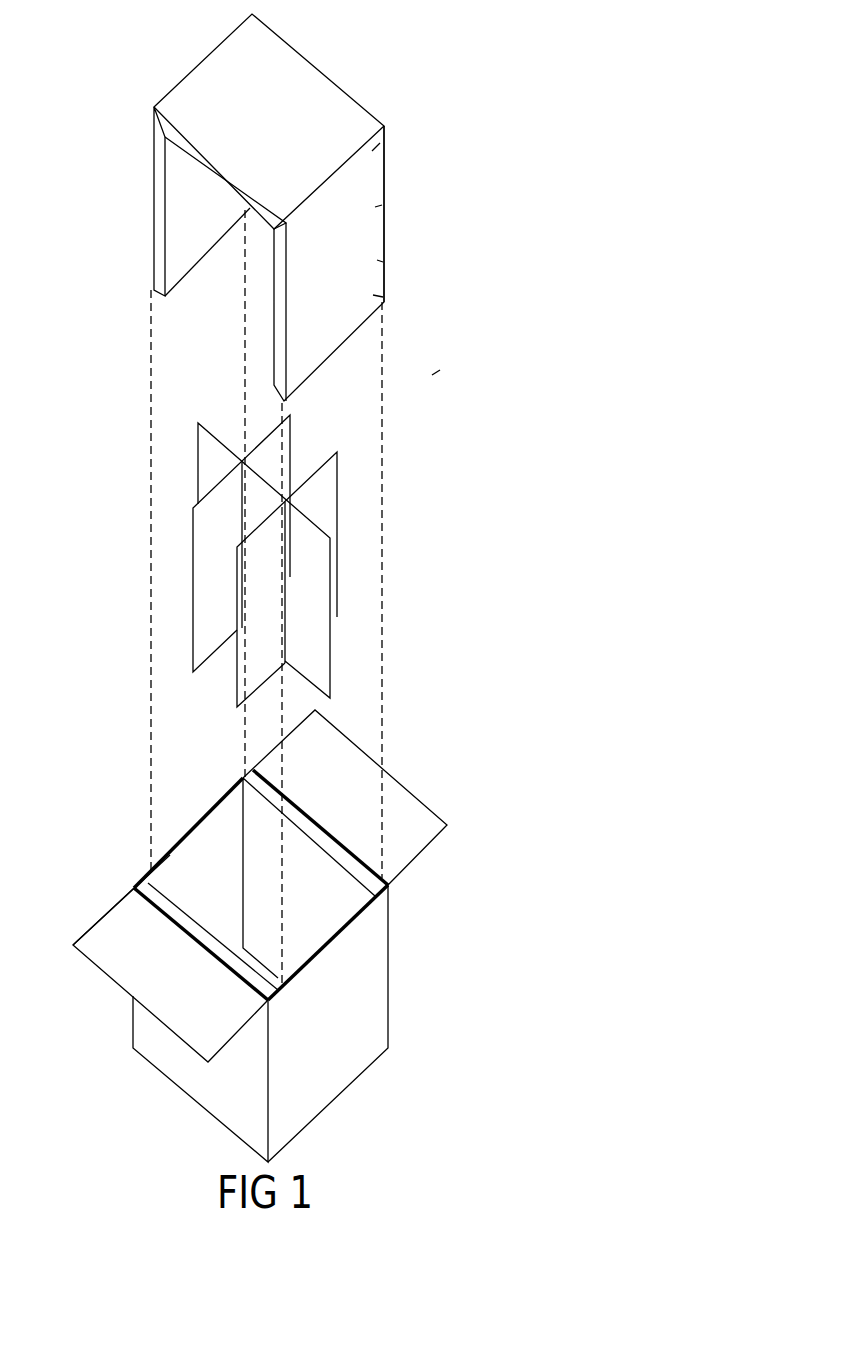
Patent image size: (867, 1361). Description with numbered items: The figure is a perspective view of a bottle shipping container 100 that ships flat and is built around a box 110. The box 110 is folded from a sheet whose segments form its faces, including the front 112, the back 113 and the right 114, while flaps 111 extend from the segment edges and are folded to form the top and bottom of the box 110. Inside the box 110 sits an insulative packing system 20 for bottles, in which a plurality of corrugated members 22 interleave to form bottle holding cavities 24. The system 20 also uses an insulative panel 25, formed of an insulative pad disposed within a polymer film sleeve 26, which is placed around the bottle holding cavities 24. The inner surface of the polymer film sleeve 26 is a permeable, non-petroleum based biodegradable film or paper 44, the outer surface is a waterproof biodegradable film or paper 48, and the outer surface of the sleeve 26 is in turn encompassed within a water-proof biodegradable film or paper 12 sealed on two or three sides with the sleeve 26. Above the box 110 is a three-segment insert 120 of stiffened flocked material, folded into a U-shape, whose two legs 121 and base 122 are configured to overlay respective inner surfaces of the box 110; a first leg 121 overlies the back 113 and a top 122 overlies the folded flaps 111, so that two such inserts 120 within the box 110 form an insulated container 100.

The container 100 is at (429, 377).
The box 110 is at (304, 936).
The flaps 111 is at (370, 807).
The front 112 is at (348, 1036).
The back 113 is at (228, 882).
The right 114 is at (256, 1097).
The three-segment insert 120 is at (248, 486).
The leg 121 is at (218, 219).
The base 122 is at (287, 129).
The water-proof biodegradable film or paper 12 is at (372, 177).
The insulative packing system 20 is at (208, 386).
The corrugated members 22 is at (212, 457).
The bottle holding cavities 24 is at (249, 581).
The insulative panel 25 is at (372, 152).
The polymer film sleeve 26 is at (375, 207).
The inner biodegradable film or paper 44 is at (377, 260).
The outer biodegradable film or paper 48 is at (373, 295).